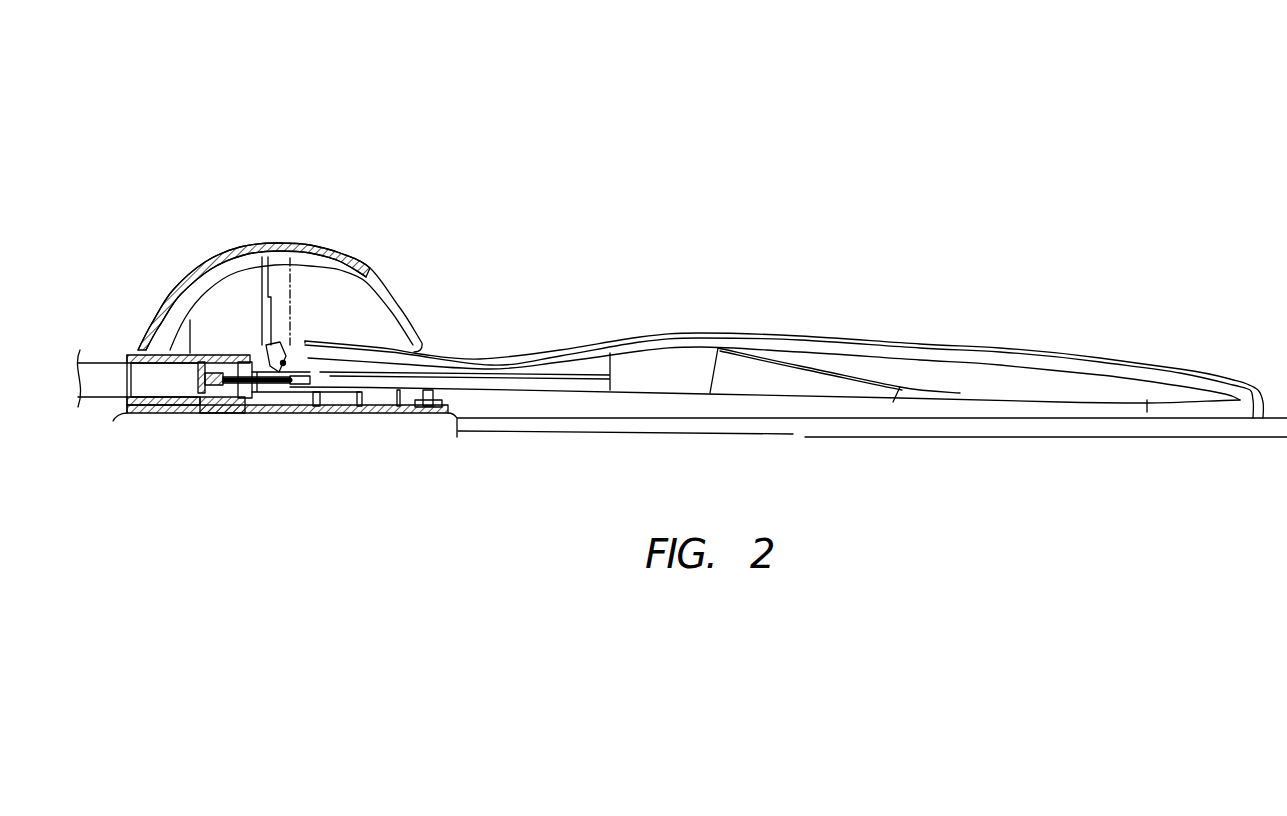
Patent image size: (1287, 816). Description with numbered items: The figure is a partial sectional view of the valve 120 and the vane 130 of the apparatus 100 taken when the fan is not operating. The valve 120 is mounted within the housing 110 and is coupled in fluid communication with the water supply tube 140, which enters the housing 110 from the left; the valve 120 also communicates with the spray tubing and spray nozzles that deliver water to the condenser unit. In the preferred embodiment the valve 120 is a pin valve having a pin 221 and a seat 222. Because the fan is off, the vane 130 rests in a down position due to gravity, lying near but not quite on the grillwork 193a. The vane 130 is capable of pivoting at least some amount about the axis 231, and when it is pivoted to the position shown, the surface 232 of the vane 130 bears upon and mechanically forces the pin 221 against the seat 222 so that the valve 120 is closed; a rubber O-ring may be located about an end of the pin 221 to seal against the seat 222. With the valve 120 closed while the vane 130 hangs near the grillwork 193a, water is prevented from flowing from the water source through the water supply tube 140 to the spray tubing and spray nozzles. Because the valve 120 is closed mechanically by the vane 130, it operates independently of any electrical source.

The computer mouse 100 is at (426, 90).
The housing 110 is at (338, 252).
The valve 120 is at (297, 427).
The vane 130 is at (921, 345).
The water supply tube 140 is at (104, 374).
The grillwork 193a is at (1034, 428).
The pin 221 is at (218, 356).
The seat 222 is at (182, 378).
The axis 231 is at (278, 338).
The surface 232 is at (310, 385).